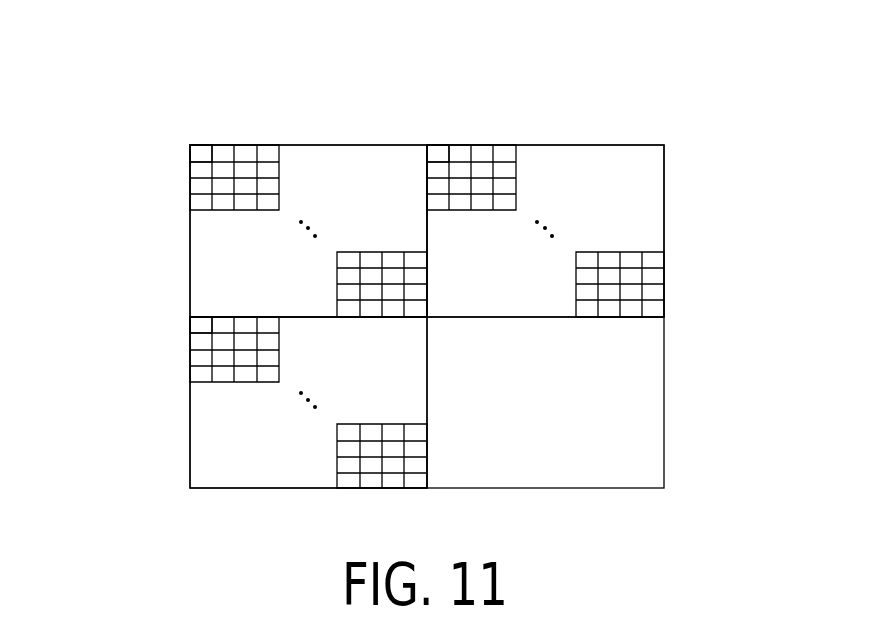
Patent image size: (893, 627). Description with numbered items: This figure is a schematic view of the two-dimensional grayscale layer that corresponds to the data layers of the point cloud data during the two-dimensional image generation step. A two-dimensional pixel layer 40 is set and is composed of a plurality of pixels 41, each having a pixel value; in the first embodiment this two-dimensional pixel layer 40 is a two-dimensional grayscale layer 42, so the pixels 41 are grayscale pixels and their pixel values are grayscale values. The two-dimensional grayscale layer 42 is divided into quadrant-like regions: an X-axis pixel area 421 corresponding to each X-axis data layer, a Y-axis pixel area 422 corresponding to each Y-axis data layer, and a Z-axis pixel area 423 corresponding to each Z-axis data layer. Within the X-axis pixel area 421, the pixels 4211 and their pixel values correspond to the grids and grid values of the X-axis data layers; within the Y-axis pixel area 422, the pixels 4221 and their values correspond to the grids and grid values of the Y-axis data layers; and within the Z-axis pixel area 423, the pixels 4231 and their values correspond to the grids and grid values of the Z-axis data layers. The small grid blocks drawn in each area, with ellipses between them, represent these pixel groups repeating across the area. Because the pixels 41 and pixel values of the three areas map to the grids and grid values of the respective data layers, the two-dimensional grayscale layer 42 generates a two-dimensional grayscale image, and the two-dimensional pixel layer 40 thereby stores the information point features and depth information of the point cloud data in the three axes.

The two-dimensional pixel layer 40 is at (383, 125).
The pixel 41 is at (263, 152).
The two-dimensional grayscale layer 42 is at (631, 147).
The X-axis pixel area 421 is at (279, 168).
The pixel of the X-axis pixel area 4211 is at (200, 152).
The Y-axis pixel area 422 is at (516, 170).
The pixel of the Y-axis pixel area 4221 is at (430, 155).
The Z-axis pixel area 423 is at (225, 382).
The pixel of the Z-axis pixel area 4231 is at (200, 324).